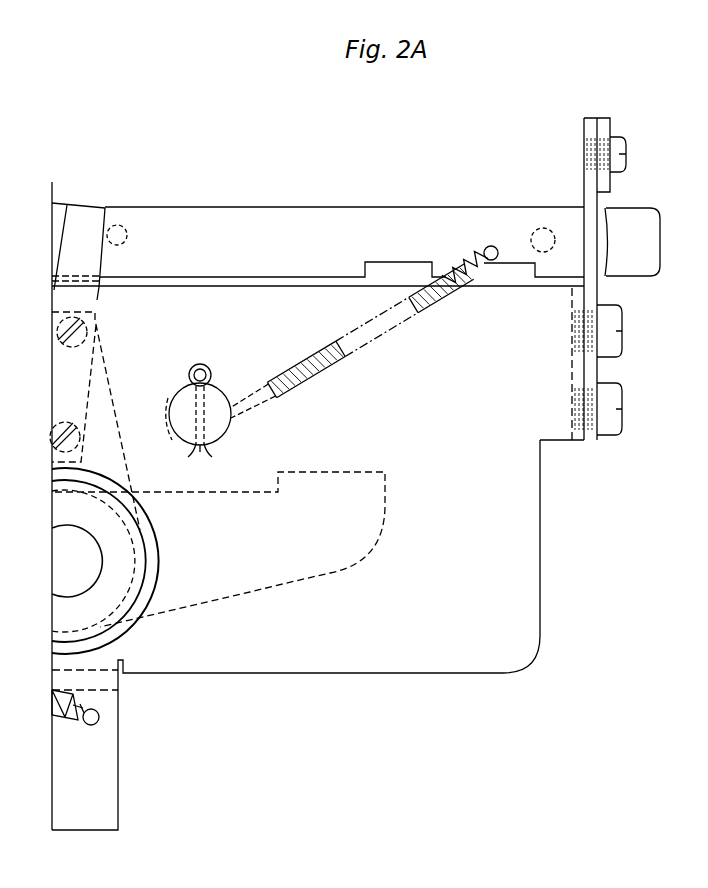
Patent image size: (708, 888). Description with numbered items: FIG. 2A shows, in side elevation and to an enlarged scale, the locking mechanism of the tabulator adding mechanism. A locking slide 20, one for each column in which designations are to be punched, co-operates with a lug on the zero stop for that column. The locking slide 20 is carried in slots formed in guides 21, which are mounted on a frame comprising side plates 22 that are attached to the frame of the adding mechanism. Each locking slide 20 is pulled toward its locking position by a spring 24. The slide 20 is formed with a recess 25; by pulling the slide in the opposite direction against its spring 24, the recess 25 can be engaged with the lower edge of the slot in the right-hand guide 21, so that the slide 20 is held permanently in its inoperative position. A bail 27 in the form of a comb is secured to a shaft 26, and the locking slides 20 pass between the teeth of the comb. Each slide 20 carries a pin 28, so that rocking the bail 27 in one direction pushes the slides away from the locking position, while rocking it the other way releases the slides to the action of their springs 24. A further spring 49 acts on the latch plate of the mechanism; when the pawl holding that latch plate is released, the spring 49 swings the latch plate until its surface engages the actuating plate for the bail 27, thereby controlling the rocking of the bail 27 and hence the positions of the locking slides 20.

The locking slide 20 is at (178, 230).
The guide 21 is at (590, 133).
The side plate 22 is at (520, 582).
The spring 24 is at (327, 370).
The recess 25 is at (503, 270).
The shaft 26 is at (80, 567).
The bail 27 is at (87, 240).
The pin 28 is at (117, 235).
The spring 49 is at (70, 703).